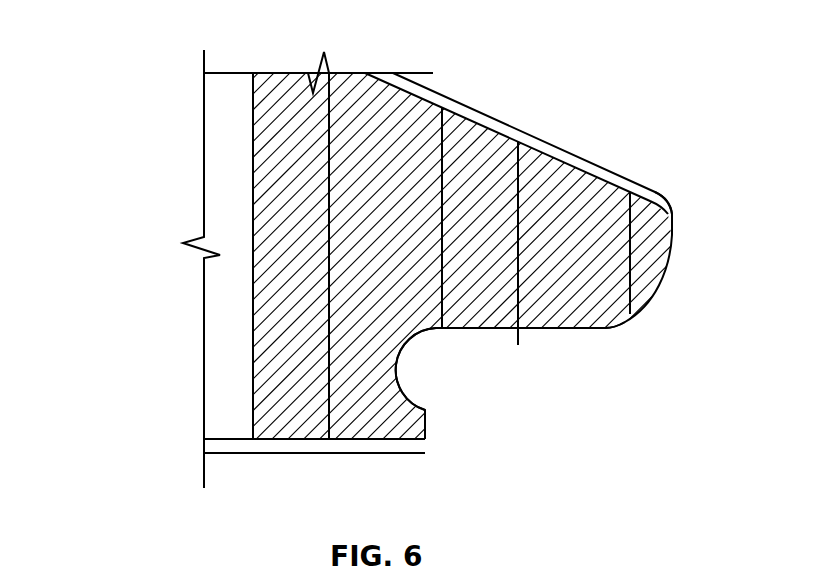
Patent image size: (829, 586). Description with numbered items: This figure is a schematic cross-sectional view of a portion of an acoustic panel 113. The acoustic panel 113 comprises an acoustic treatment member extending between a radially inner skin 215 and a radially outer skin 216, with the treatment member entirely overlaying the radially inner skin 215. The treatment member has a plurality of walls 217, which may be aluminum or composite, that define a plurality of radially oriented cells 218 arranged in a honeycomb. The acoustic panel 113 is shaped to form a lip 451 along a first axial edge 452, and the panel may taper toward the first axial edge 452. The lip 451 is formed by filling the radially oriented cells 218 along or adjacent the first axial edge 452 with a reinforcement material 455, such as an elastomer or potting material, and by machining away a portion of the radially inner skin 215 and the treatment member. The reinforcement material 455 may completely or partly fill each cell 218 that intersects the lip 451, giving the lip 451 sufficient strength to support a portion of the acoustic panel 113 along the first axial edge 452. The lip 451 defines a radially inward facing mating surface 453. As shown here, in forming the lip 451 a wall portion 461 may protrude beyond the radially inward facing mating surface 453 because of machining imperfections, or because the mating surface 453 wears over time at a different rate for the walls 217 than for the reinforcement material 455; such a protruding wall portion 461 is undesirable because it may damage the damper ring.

The acoustic panel 113 is at (122, 60).
The radially inner skin 215 is at (225, 444).
The radially outer skin 216 is at (441, 97).
The walls 217 is at (519, 188).
The radially oriented cells 218 is at (483, 158).
The lip 451 is at (560, 366).
The first axial edge 452 is at (672, 214).
The radially inward facing mating surface 453 is at (583, 330).
The reinforcement material 455 is at (594, 200).
The wall portion 461 is at (508, 342).